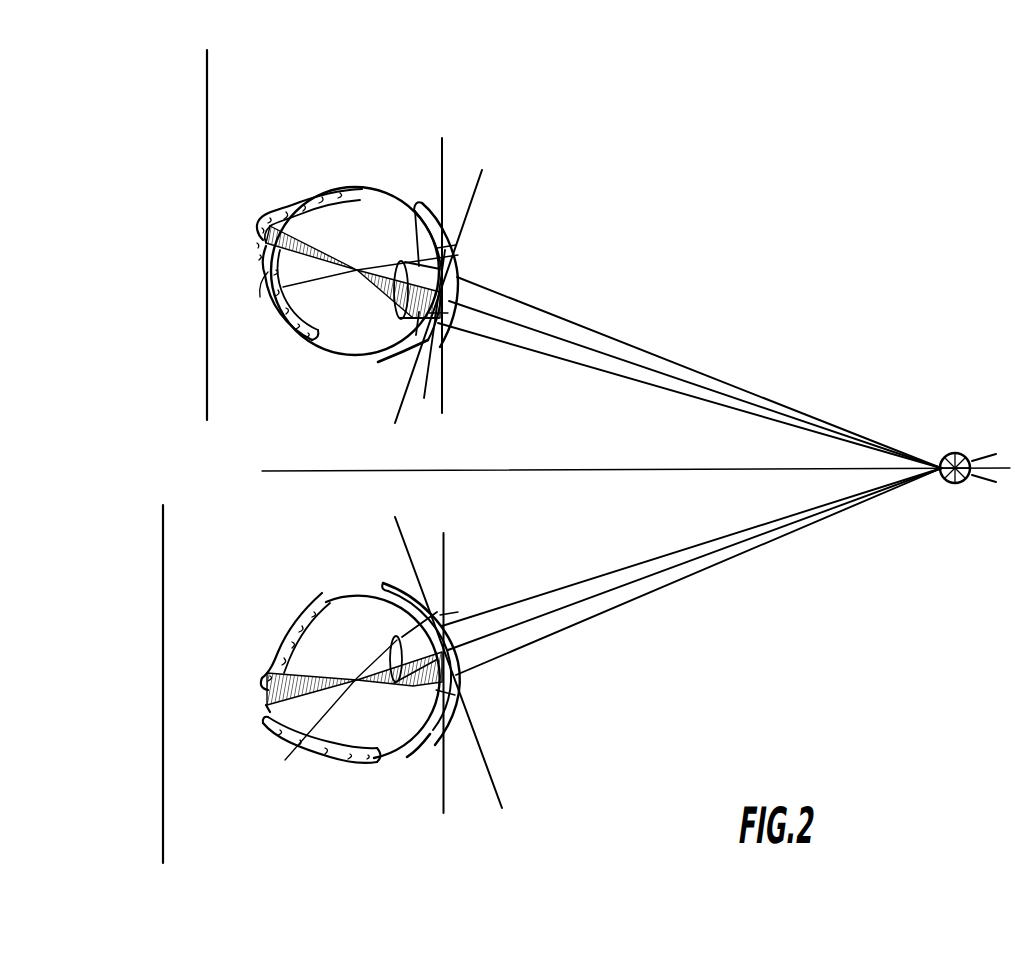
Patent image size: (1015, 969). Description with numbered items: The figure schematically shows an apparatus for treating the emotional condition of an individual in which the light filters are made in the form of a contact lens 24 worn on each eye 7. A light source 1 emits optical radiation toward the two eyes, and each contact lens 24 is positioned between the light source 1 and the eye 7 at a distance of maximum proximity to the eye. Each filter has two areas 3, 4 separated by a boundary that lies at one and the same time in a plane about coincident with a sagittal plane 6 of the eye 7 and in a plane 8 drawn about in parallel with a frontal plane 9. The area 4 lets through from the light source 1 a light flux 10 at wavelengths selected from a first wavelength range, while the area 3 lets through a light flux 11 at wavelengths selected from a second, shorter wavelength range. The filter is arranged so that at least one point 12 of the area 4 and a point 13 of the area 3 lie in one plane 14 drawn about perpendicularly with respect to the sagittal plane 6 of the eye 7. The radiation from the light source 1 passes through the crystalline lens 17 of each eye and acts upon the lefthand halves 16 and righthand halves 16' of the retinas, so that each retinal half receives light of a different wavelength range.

The light source 1 is at (958, 454).
The area 3 is at (424, 200).
The area 4 is at (390, 360).
The sagittal plane 6 is at (618, 357).
The eye 7 is at (379, 189).
The plane 8 is at (442, 165).
The frontal plane 9 is at (207, 122).
The light flux 10 is at (395, 312).
The light flux 11 is at (418, 268).
The point 12 is at (487, 692).
The point 13 is at (457, 263).
The plane 14 is at (478, 183).
The lefthand half of the retina 16 is at (296, 417).
The righthand half of the retina 16' is at (311, 518).
The crystalline lens 17 is at (400, 262).
The contact lens 24 is at (472, 265).